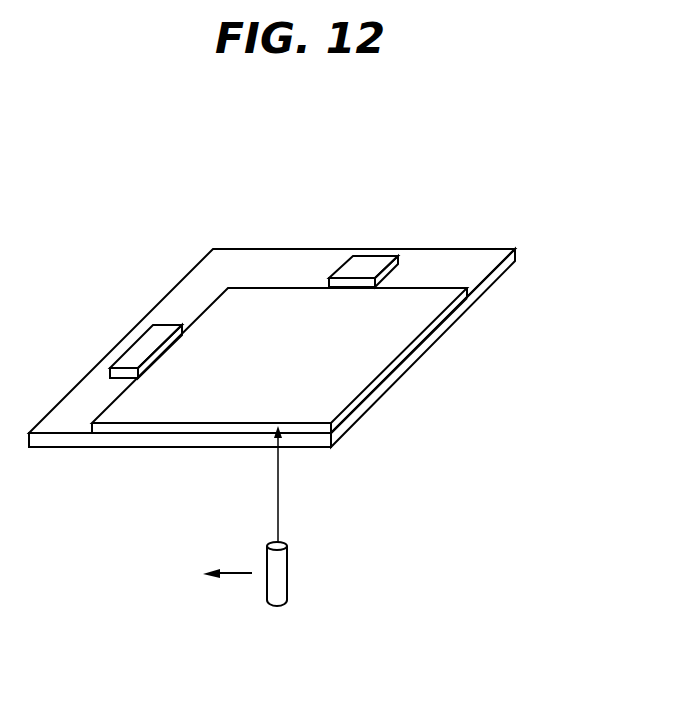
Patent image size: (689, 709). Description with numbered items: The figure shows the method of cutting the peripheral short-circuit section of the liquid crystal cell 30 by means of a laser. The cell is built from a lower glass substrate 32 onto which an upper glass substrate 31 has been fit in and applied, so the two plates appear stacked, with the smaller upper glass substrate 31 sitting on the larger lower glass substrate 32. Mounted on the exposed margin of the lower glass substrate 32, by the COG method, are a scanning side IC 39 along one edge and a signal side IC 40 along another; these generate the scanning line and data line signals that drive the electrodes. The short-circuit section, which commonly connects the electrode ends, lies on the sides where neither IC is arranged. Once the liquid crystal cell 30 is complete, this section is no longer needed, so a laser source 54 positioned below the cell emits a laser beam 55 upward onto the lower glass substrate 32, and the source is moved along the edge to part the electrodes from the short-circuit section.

The liquid crystal cell 30 is at (330, 303).
The upper glass substrate 31 is at (407, 297).
The lower glass substrate 32 is at (472, 262).
The scanning side IC 39 is at (140, 355).
The signal side IC 40 is at (358, 260).
The laser source 54 is at (278, 575).
The laser beam 55 is at (278, 502).